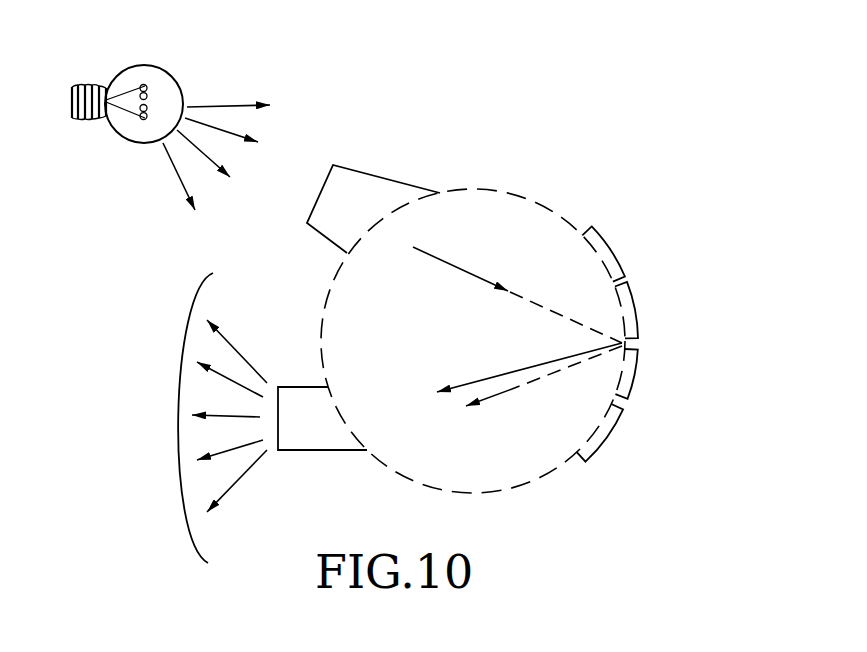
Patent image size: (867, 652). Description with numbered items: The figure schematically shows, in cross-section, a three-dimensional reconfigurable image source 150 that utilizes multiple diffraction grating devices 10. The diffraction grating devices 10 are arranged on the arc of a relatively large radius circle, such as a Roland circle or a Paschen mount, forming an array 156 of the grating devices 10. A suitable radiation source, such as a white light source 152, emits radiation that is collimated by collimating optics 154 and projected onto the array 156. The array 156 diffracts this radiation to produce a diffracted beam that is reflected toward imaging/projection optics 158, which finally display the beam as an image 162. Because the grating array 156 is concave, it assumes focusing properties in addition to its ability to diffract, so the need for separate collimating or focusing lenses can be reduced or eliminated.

The diffraction grating device 10 is at (623, 413).
The three-dimensional reconfigurable image source 150 is at (545, 172).
The white light source 152 is at (173, 82).
The collimating optics 154 is at (348, 183).
The array of grating devices 156 is at (540, 203).
The imaging/projection optics 158 is at (305, 432).
The image 162 is at (193, 303).